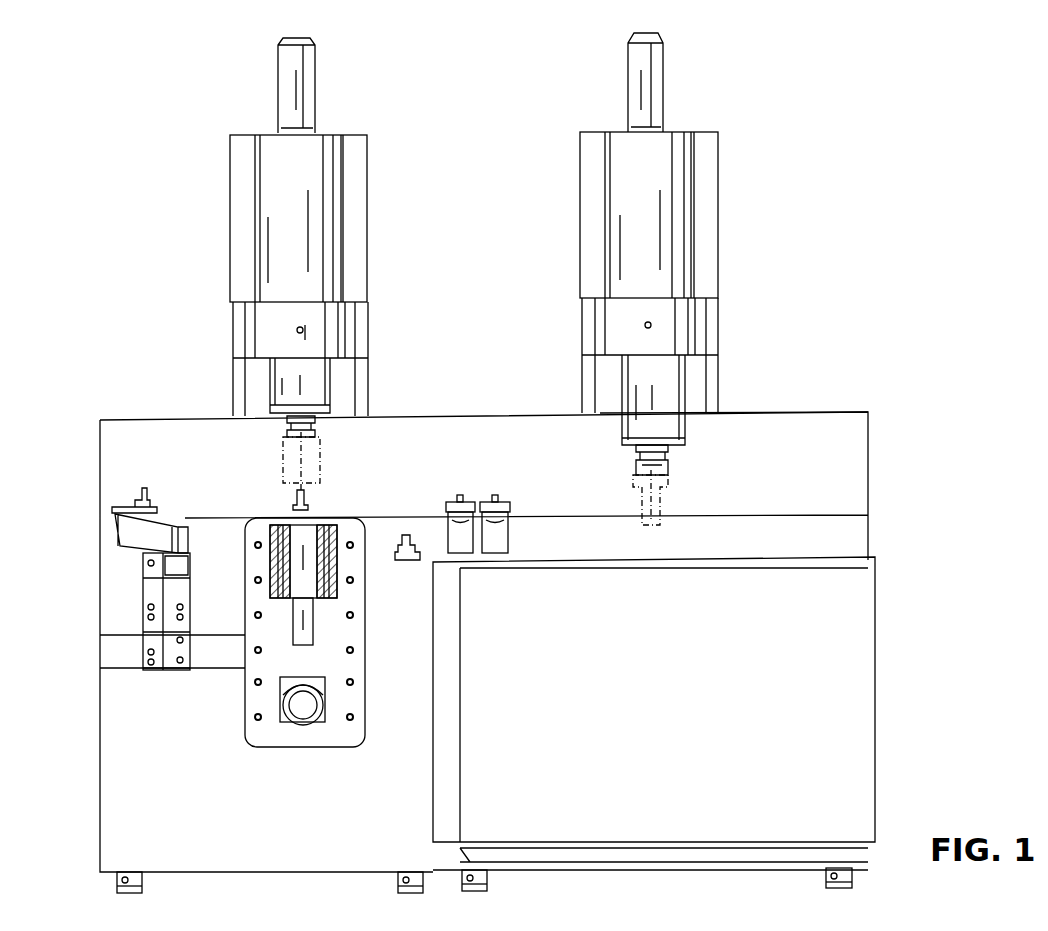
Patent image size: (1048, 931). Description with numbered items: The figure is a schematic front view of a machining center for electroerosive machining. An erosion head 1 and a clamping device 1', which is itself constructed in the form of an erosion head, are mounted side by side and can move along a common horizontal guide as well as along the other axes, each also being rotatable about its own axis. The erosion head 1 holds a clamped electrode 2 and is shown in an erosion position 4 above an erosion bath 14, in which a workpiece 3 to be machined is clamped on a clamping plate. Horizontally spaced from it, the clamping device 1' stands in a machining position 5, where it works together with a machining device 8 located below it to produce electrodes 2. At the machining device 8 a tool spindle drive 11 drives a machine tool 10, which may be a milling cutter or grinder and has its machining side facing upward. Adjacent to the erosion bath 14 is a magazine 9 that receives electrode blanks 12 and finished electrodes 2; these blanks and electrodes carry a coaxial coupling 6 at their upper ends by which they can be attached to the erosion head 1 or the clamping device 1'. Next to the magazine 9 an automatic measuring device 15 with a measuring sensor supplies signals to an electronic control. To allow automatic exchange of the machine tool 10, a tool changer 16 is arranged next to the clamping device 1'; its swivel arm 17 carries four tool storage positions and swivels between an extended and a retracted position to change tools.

The erosion head 1 is at (670, 239).
The clamping device 1' is at (318, 227).
The electrode 2 is at (680, 500).
The workpiece 3 is at (783, 145).
The erosion position 4 is at (742, 452).
The machining position 5 is at (222, 440).
The coaxial coupling 6 is at (500, 500).
The machining device 8 is at (270, 555).
The magazine 9 is at (478, 502).
The machine tool 10 is at (297, 497).
The tool spindle drive 11 is at (293, 606).
The electrode blank 12 is at (322, 455).
The erosion bath 14 is at (856, 701).
The automatic measuring device 15 is at (398, 548).
The tool changer 16 is at (148, 592).
The swivel arm 17 is at (135, 531).